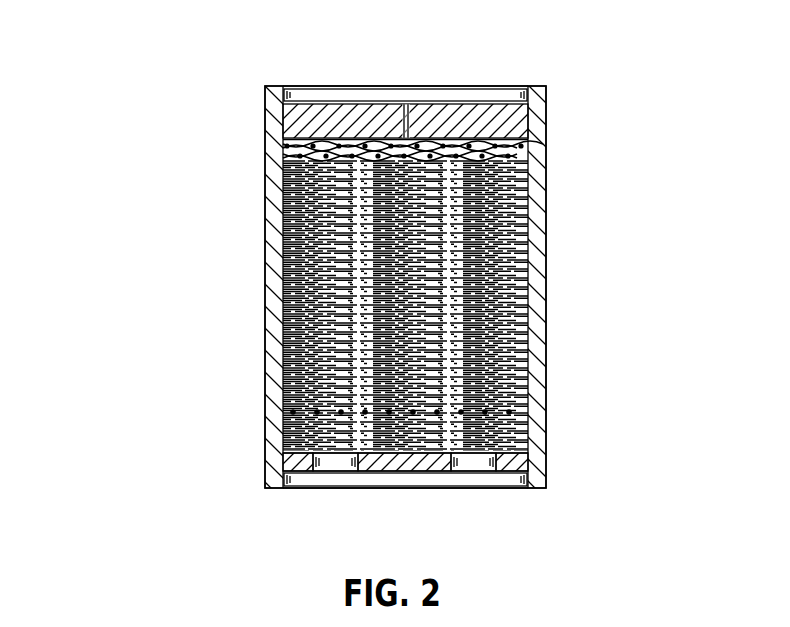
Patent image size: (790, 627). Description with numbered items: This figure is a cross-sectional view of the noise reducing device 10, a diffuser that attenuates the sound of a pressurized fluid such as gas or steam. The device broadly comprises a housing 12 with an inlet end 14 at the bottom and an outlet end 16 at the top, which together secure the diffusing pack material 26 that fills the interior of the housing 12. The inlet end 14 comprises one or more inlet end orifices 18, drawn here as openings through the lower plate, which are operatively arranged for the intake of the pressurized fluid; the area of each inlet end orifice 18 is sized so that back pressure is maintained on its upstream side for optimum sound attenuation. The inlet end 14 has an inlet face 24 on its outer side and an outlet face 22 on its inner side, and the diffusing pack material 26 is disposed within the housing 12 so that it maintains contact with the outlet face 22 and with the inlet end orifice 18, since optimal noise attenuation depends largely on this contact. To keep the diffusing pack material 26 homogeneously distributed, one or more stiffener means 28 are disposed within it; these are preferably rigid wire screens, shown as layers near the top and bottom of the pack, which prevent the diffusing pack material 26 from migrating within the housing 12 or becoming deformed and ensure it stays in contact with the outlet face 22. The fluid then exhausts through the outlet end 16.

The noise reducing device 10 is at (168, 121).
The housing 12 is at (556, 251).
The inlet end 14 is at (562, 508).
The outlet end 16 is at (560, 66).
The inlet end orifice 18 is at (324, 457).
The outlet face 22 is at (272, 423).
The inlet face 24 is at (386, 457).
The diffusing pack material 26 is at (417, 298).
The stiffener means 28 is at (525, 133).